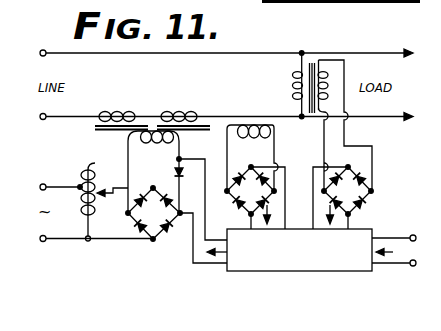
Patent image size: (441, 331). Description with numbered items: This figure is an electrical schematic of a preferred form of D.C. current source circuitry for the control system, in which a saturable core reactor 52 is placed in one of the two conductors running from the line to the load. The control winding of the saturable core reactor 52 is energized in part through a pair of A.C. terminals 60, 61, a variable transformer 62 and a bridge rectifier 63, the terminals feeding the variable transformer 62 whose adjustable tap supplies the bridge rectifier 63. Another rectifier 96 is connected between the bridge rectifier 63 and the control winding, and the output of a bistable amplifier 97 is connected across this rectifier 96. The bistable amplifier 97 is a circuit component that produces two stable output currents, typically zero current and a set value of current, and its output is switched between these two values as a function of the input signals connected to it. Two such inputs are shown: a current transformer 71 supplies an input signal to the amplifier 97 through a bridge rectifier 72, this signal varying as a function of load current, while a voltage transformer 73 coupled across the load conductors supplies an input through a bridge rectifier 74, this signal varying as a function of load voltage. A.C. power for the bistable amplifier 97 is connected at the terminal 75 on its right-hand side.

The saturable core reactor 52 is at (159, 85).
The rectifier 96 is at (176, 175).
The A.C. terminal 60 is at (45, 183).
The A.C. terminal 61 is at (43, 242).
The variable transformer 62 is at (95, 217).
The bridge rectifier 63 is at (157, 235).
The voltage transformer 73 is at (295, 82).
The current transformer 71 is at (279, 126).
The bridge rectifier 72 is at (231, 194).
The bridge rectifier 74 is at (368, 192).
The bistable amplifier 97 is at (258, 272).
The terminal 75 is at (413, 234).